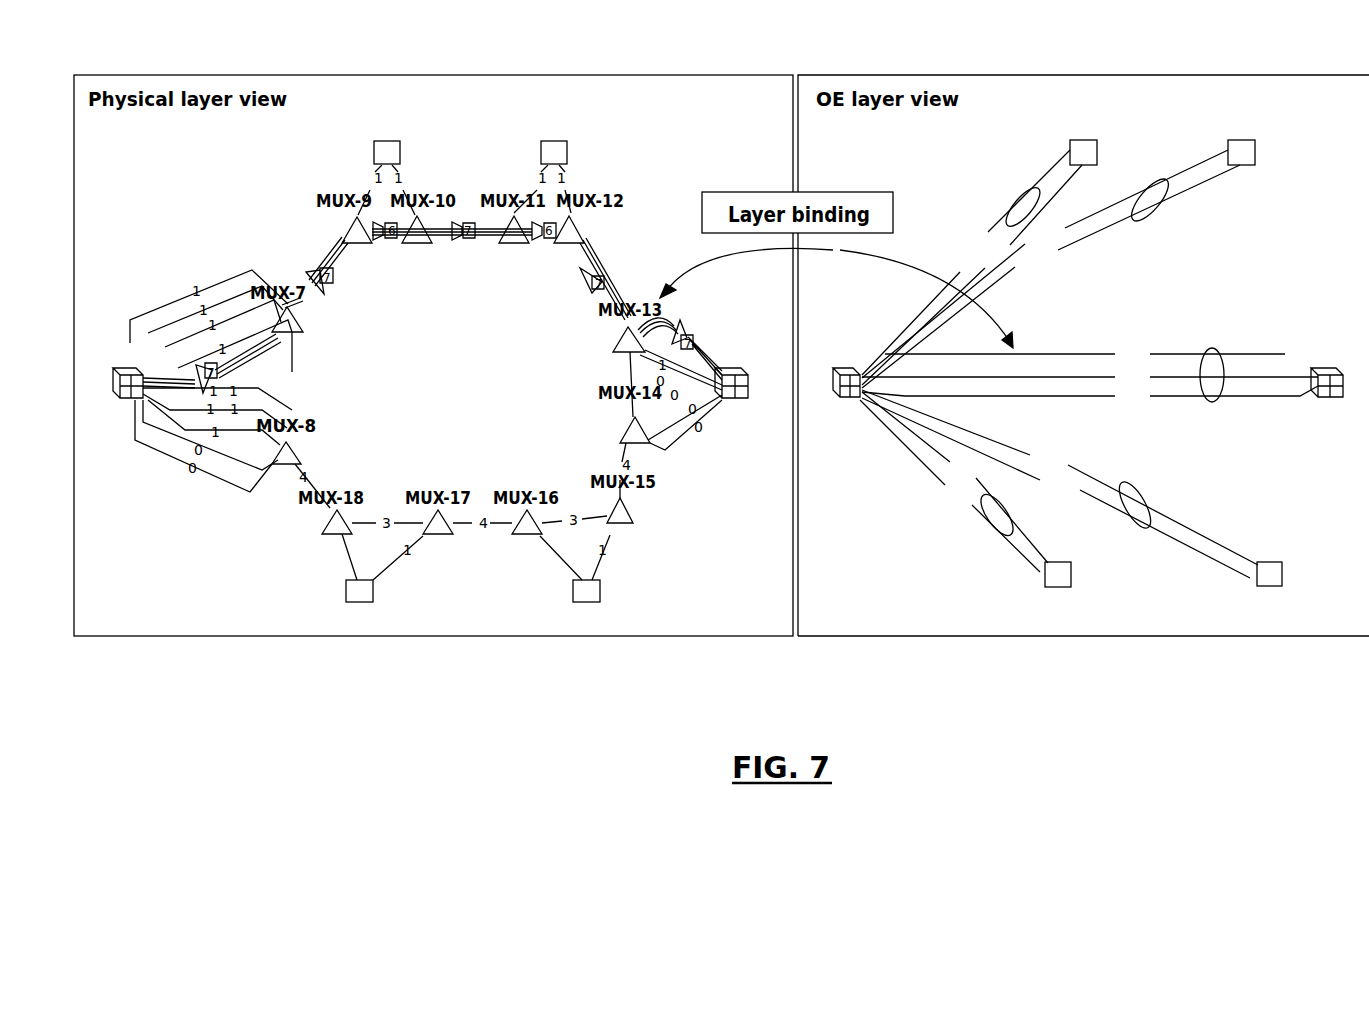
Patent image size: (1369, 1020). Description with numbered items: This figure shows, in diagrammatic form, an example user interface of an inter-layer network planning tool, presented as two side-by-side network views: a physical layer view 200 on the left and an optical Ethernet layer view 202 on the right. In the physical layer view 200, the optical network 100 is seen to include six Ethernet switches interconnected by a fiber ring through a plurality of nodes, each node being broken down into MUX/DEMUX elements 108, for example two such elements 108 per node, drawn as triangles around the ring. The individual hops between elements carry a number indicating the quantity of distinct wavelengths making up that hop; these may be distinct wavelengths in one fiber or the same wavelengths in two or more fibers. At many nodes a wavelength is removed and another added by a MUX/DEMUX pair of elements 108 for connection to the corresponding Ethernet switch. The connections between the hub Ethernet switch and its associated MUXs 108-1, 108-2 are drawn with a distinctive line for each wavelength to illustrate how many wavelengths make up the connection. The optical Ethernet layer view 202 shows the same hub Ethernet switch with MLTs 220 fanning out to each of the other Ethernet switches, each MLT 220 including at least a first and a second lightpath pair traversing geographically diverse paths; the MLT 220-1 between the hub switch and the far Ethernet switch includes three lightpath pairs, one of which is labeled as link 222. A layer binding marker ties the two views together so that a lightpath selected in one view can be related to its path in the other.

The optical network 100 is at (278, 214).
The MUX/DEMUX element 108 is at (362, 245).
The MUX associated with hub Ethernet switch 108-1 is at (303, 326).
The MUX associated with hub Ethernet switch 108-2 is at (301, 455).
The physical layer view 200 is at (314, 36).
The optical Ethernet layer view 202 is at (1156, 36).
The MLT 220 is at (1012, 200).
The MLT 220-1 is at (1213, 348).
The optical link 222 is at (1075, 353).